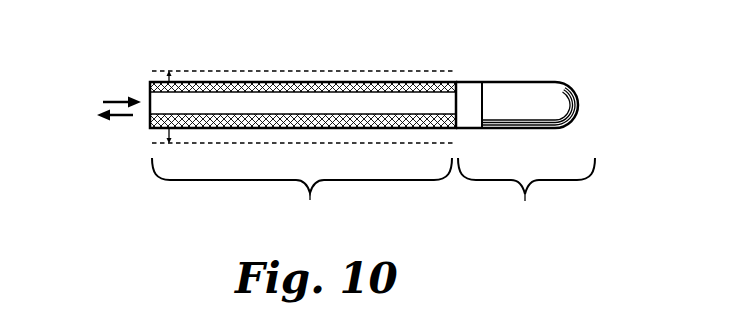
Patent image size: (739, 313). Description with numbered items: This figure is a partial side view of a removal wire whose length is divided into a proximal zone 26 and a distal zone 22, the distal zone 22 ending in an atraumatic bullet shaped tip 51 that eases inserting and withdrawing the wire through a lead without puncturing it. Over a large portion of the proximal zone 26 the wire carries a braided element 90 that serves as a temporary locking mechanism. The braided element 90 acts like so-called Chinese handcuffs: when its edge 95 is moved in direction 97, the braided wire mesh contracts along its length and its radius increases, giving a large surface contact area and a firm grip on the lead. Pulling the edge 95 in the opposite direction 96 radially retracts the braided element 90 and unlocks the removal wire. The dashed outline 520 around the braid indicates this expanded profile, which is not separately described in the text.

The proximal zone 26 is at (303, 162).
The distal zone 22 is at (526, 157).
The edge of braided element 95 is at (150, 82).
The braided element 90 is at (340, 82).
The expanded outer profile 520 is at (229, 71).
The bullet shaped tip 51 is at (578, 104).
The direction 97 is at (119, 100).
The direction 96 is at (120, 118).